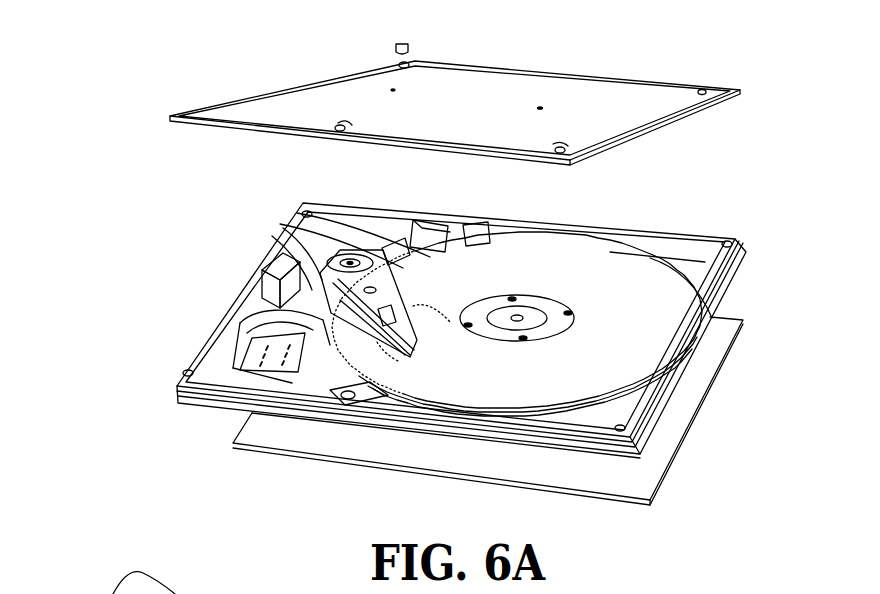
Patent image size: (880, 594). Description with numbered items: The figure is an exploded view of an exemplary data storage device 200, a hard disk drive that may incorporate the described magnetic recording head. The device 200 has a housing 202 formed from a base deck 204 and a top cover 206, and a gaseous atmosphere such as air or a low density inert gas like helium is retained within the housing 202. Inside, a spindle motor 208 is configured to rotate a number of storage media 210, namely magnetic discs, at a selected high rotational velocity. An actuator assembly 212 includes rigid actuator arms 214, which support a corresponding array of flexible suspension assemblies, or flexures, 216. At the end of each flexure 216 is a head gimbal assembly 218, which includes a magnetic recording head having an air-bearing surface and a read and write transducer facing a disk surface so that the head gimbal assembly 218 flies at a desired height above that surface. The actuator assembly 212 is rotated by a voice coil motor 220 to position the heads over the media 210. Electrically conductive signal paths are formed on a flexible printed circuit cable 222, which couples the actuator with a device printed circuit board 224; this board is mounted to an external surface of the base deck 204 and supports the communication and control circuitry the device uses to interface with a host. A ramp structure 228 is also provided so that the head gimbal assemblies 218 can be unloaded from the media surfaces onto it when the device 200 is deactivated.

The data storage device 200 is at (140, 76).
The housing 202 is at (203, 207).
The base deck 204 is at (688, 366).
The top cover 206 is at (540, 82).
The spindle motor 208 is at (525, 310).
The storage media 210 is at (567, 440).
The actuator assembly 212 is at (400, 293).
The actuator arms 214 is at (412, 300).
The flexible suspension assemblies 216 is at (408, 318).
The head gimbal assembly 218 is at (372, 332).
The voice coil motor 220 is at (352, 228).
The flexible printed circuit cable 222 is at (266, 284).
The device printed circuit board 224 is at (262, 453).
The ramp structure 228 is at (440, 376).